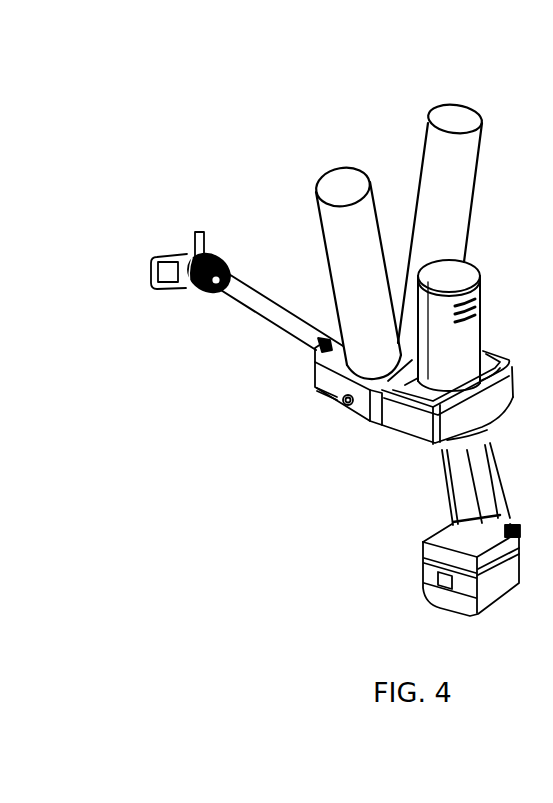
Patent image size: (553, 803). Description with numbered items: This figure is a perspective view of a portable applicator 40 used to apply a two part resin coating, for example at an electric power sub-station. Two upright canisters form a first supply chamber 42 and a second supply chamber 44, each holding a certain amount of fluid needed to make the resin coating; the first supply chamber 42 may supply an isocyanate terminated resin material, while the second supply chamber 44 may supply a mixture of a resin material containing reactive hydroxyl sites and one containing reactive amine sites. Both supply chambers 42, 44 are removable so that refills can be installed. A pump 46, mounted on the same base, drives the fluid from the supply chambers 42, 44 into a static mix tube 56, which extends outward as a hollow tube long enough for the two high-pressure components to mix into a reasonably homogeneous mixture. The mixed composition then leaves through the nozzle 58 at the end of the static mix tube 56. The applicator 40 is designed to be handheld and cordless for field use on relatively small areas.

The applicator 40 is at (272, 140).
The first supply chamber 42 is at (319, 218).
The second supply chamber 44 is at (425, 141).
The pump 46 is at (481, 300).
The static mix tube 56 is at (277, 325).
The nozzle 58 is at (210, 258).